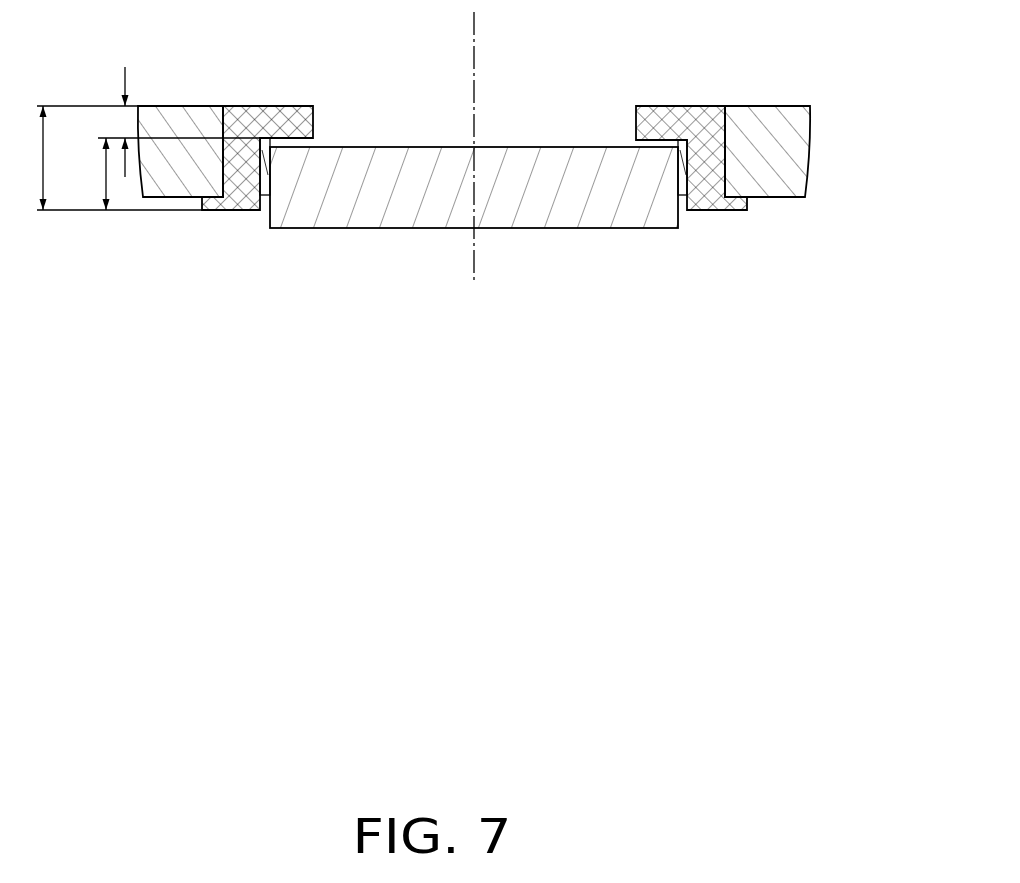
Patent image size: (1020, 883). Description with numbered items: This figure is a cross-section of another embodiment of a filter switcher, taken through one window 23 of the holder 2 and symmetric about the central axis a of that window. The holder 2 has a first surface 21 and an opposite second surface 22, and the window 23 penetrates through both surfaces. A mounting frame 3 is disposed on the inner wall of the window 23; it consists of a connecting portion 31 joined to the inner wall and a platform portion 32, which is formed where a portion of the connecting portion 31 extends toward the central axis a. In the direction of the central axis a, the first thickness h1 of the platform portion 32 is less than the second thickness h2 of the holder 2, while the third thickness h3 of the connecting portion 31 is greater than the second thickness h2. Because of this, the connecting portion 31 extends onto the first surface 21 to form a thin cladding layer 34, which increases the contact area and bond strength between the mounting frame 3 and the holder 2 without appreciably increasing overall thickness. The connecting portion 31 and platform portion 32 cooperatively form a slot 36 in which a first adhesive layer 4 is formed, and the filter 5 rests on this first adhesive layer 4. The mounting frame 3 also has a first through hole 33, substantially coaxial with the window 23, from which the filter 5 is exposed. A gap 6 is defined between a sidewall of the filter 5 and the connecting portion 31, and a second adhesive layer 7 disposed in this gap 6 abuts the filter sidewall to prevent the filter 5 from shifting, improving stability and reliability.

The holder 2 is at (883, 60).
The first surface 21 is at (777, 197).
The second surface 22 is at (798, 103).
The window 23 is at (734, 178).
The mounting frame 3 is at (358, 62).
The connecting portion 31 is at (250, 160).
The platform portion 32 is at (270, 132).
The first through hole 33 is at (346, 124).
The cladding layer 34 is at (213, 202).
The slot 36 is at (302, 137).
The first adhesive layer 4 is at (655, 142).
The filter 5 is at (357, 212).
The gap 6 is at (669, 199).
The second adhesive layer 7 is at (683, 182).
The central axis a is at (477, 33).
The first thickness h1 is at (105, 122).
The second thickness h2 is at (85, 174).
The third thickness h3 is at (25, 158).